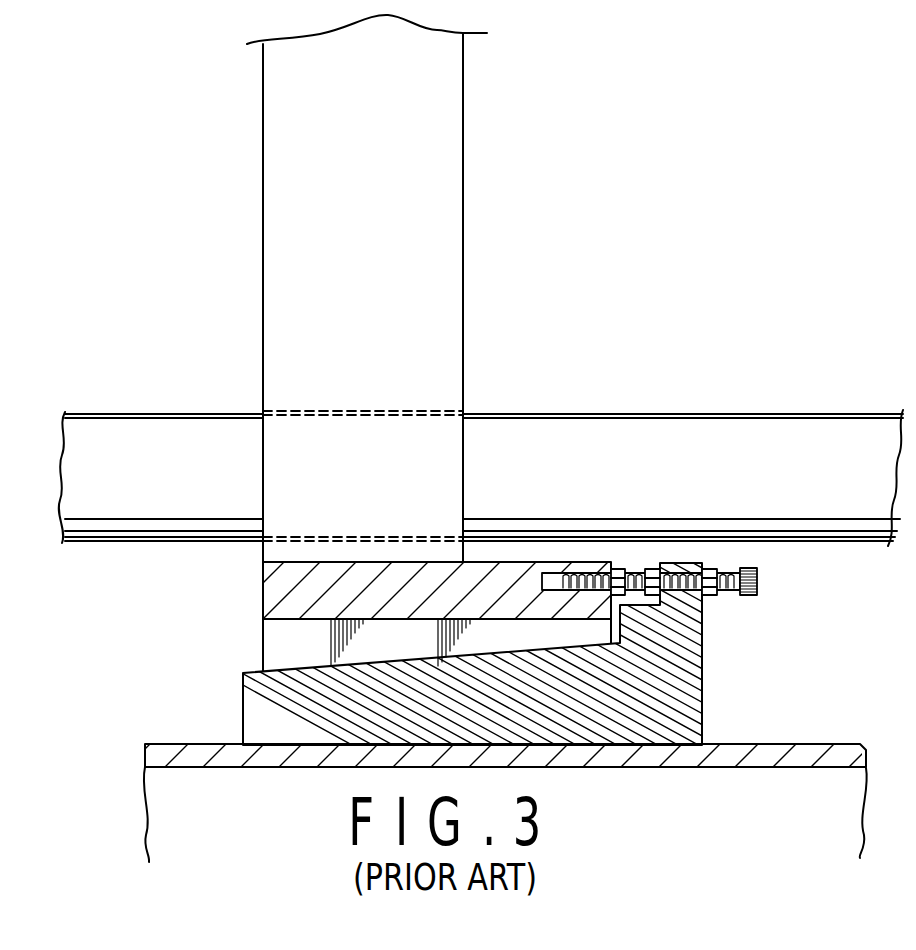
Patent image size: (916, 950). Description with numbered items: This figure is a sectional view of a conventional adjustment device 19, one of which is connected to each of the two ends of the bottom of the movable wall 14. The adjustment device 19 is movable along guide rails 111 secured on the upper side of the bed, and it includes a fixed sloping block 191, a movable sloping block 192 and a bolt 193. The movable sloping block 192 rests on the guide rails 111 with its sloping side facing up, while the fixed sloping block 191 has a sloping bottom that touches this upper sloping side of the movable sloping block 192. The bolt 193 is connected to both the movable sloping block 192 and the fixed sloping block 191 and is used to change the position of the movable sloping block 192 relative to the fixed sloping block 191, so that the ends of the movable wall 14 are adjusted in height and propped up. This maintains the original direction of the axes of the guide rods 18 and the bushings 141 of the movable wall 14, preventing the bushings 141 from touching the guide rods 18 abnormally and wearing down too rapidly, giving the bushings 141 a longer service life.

The movable wall 14 is at (447, 294).
The bushings 141 is at (425, 408).
The guide rods 18 is at (693, 418).
The adjustment devices 19 is at (506, 621).
The fixed sloping block 191 is at (363, 644).
The movable sloping block 192 is at (678, 717).
The bolt 193 is at (758, 578).
The guide rails 111 is at (208, 743).